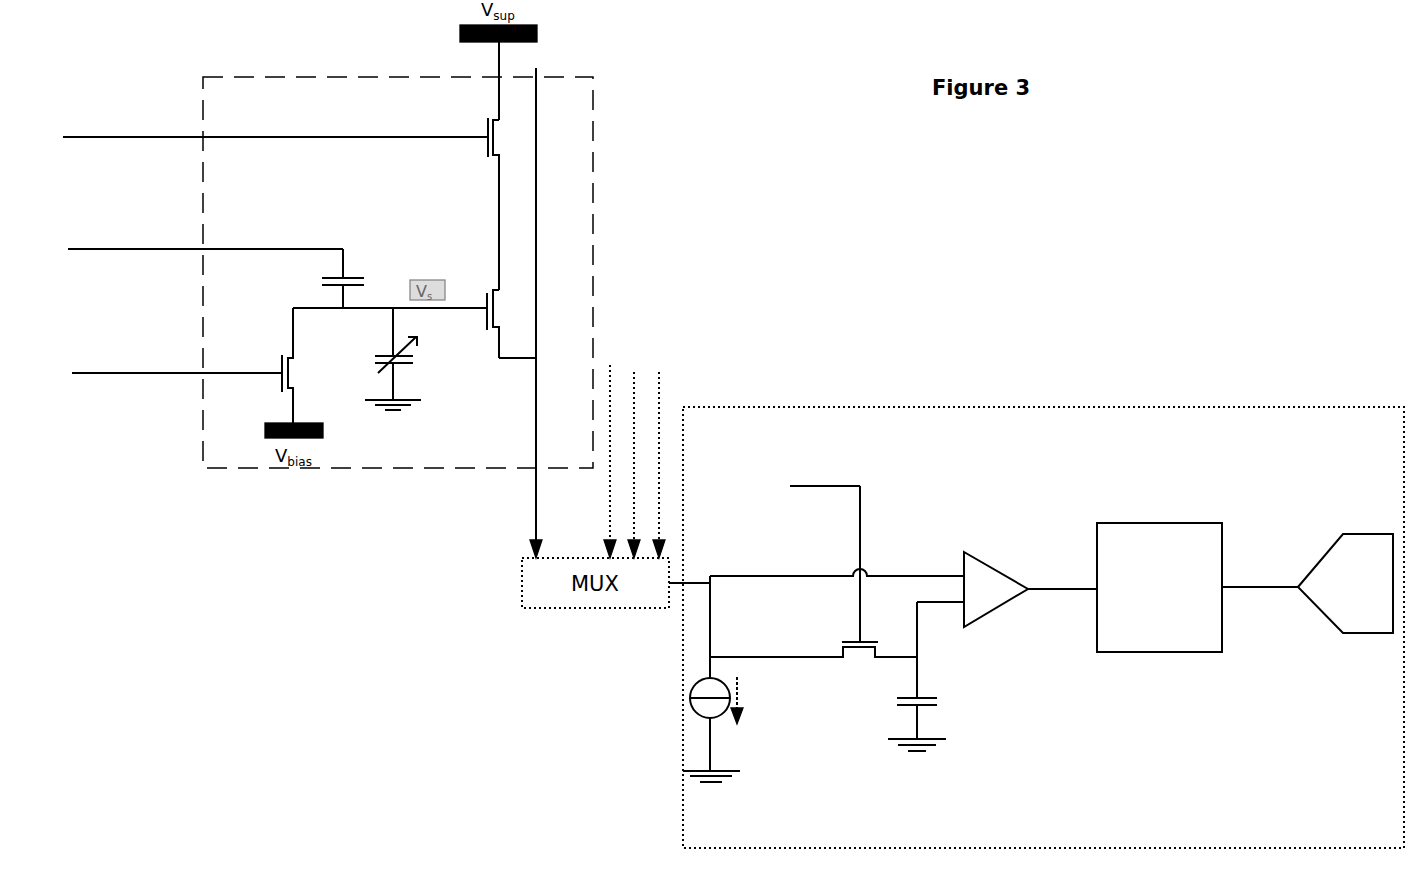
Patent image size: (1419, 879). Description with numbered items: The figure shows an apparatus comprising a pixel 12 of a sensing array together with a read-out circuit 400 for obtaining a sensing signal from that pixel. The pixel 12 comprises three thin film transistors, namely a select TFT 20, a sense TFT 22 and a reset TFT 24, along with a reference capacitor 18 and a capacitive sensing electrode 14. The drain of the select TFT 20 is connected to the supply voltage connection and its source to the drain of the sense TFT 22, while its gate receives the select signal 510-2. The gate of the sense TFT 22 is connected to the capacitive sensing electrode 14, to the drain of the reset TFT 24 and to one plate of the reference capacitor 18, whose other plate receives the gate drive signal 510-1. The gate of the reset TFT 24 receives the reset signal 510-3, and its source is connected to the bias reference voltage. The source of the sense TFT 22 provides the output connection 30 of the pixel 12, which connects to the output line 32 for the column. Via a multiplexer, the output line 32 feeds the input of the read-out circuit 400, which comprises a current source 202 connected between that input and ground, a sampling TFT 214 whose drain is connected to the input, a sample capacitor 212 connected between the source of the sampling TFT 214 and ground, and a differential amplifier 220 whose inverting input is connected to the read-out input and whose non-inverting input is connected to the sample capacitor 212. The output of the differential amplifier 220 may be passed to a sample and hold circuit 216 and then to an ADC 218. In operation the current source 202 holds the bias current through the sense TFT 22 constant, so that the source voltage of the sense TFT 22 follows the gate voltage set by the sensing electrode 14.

The pixel 12 is at (398, 261).
The capacitive sensing electrode 14 is at (390, 359).
The reference capacitor 18 is at (376, 262).
The select TFT 20 is at (486, 126).
The sense TFT 22 is at (486, 296).
The reset TFT 24 is at (280, 359).
The output connection 30 is at (522, 366).
The output line 32 is at (535, 493).
The current source 202 is at (688, 718).
The sample capacitor 212 is at (930, 705).
The sampling TFT 214 is at (857, 658).
The sample and hold circuit 216 is at (1159, 587).
The ADC 218 is at (1345, 583).
The differential amplifier 220 is at (1010, 556).
The read-out circuit 400 is at (1043, 616).
The gate drive signal 510-1 is at (192, 212).
The select signal 510-2 is at (260, 106).
The reset signal 510-3 is at (162, 342).